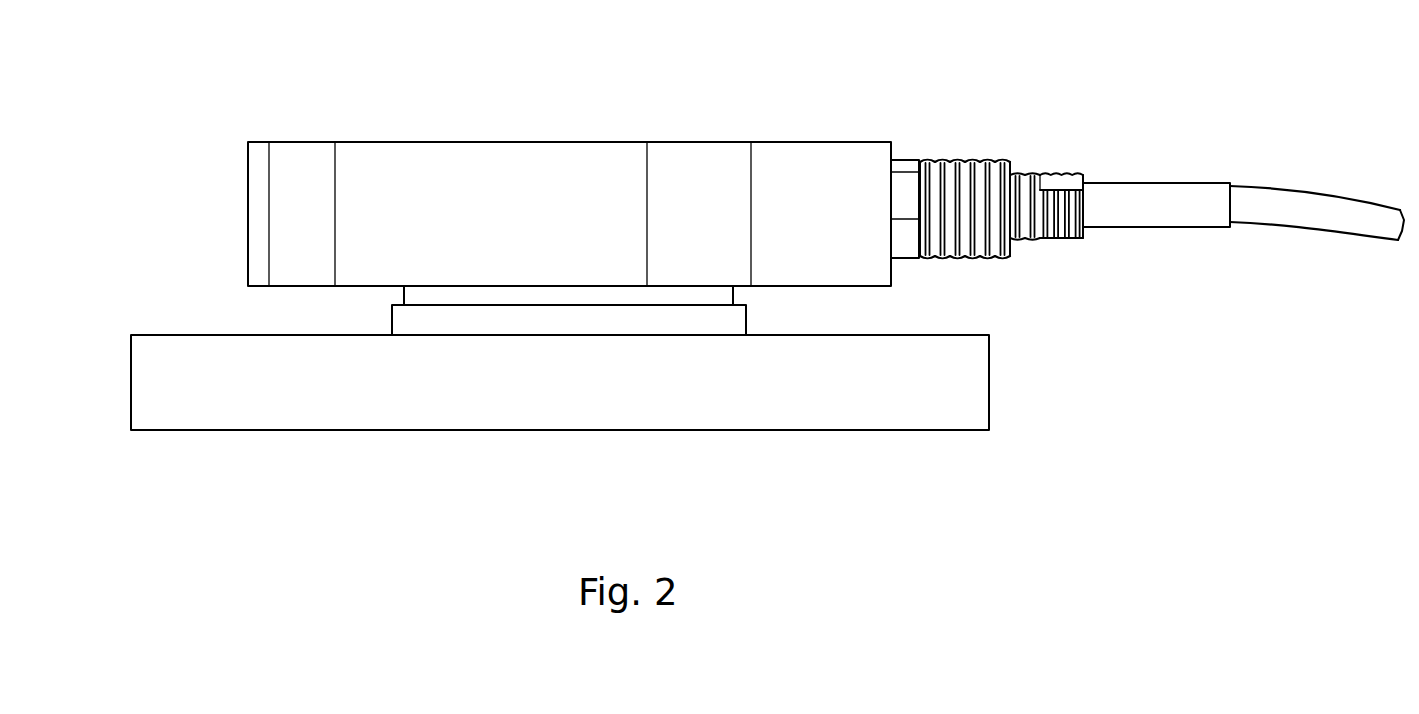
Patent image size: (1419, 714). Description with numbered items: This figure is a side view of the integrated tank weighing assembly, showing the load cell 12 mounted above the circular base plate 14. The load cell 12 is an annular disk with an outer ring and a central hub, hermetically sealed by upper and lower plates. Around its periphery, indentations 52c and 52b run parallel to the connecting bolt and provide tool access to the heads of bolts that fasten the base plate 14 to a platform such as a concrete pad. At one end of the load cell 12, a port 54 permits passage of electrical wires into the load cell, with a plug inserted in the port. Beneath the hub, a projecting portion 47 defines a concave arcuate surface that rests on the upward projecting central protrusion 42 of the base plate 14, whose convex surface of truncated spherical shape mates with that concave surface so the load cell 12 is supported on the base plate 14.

The load cell 12 is at (530, 168).
The indentation 52c is at (297, 158).
The indentation 52b is at (680, 163).
The port 54 is at (898, 158).
The projecting portion 47 is at (404, 301).
The central protrusion 42 is at (748, 322).
The base plate 14 is at (404, 403).